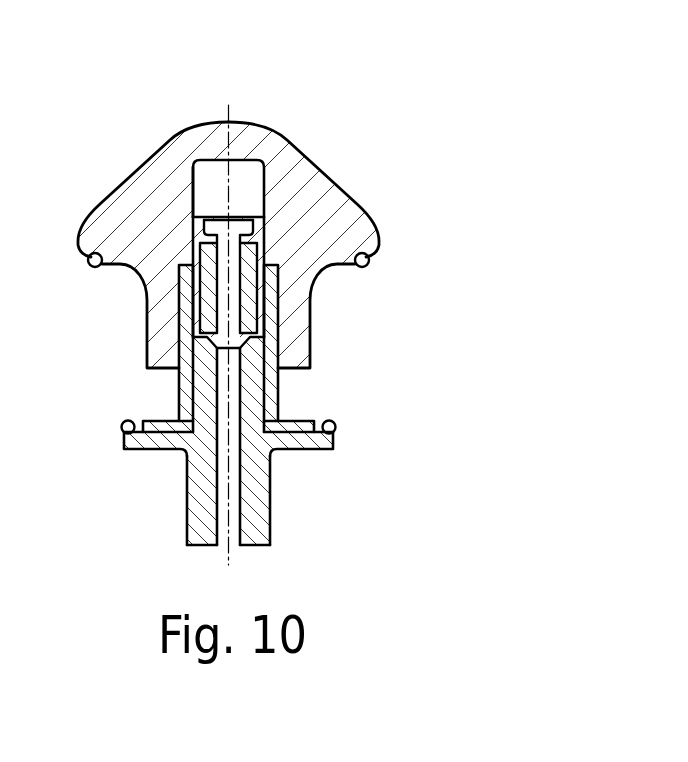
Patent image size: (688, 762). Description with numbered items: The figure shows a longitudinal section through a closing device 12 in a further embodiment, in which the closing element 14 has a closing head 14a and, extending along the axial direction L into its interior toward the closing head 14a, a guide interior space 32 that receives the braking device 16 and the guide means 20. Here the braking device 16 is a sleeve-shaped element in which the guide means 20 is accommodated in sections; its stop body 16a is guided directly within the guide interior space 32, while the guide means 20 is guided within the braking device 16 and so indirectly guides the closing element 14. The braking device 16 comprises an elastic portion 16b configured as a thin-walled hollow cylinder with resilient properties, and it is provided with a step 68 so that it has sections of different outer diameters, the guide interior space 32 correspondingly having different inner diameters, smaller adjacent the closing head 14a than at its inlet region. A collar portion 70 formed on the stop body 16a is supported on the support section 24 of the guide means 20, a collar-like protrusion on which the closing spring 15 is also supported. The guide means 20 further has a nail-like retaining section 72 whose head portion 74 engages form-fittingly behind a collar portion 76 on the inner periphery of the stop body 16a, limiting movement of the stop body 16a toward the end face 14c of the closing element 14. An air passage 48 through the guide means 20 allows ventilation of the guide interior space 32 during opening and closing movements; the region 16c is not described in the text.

The closing device 12 is at (381, 120).
The closing element 14 is at (162, 173).
The closing head 14a is at (285, 150).
The end face 14c is at (212, 180).
The closing spring 15 is at (371, 256).
The braking device 16 is at (248, 175).
The stop body 16a is at (257, 228).
The elastic portion 16b is at (262, 288).
The slot bottom wall 16c is at (264, 203).
The guide means 20 is at (260, 495).
The support section 24 is at (168, 443).
The guide interior space 32 is at (273, 270).
The air passage 48 is at (227, 533).
The step 68 is at (186, 334).
The collar portion 70 is at (307, 428).
The retaining section 72 is at (240, 318).
The head portion 74 is at (227, 220).
The collar portion 76 is at (198, 285).
The axial direction L is at (226, 110).